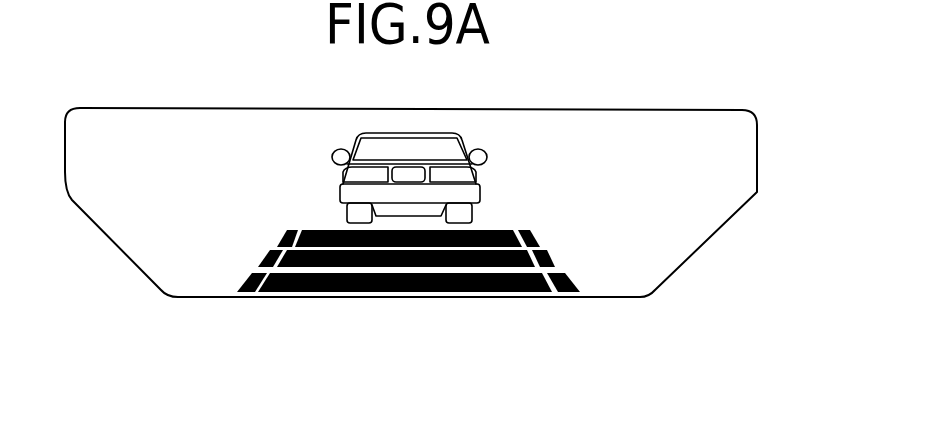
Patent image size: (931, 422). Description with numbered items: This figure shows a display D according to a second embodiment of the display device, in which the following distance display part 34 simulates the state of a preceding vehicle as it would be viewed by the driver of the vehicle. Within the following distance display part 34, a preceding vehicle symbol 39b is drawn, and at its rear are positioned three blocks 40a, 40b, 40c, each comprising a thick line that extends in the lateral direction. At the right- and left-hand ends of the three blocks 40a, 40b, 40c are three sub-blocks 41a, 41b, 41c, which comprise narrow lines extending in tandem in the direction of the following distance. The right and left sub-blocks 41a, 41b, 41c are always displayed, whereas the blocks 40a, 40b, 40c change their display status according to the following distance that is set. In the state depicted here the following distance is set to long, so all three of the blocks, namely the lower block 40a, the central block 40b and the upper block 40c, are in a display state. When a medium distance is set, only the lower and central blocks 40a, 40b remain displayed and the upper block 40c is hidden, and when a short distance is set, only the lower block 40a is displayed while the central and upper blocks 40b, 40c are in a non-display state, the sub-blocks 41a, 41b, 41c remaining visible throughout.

The display D is at (534, 104).
The following distance display part 34 is at (198, 263).
The preceding vehicle symbol 39b is at (350, 172).
The lower block 40a is at (340, 297).
The central block 40b is at (400, 262).
The upper block 40c is at (487, 230).
The sub-block 41a is at (244, 283).
The sub-block 41b is at (264, 255).
The sub-block 41c is at (288, 231).